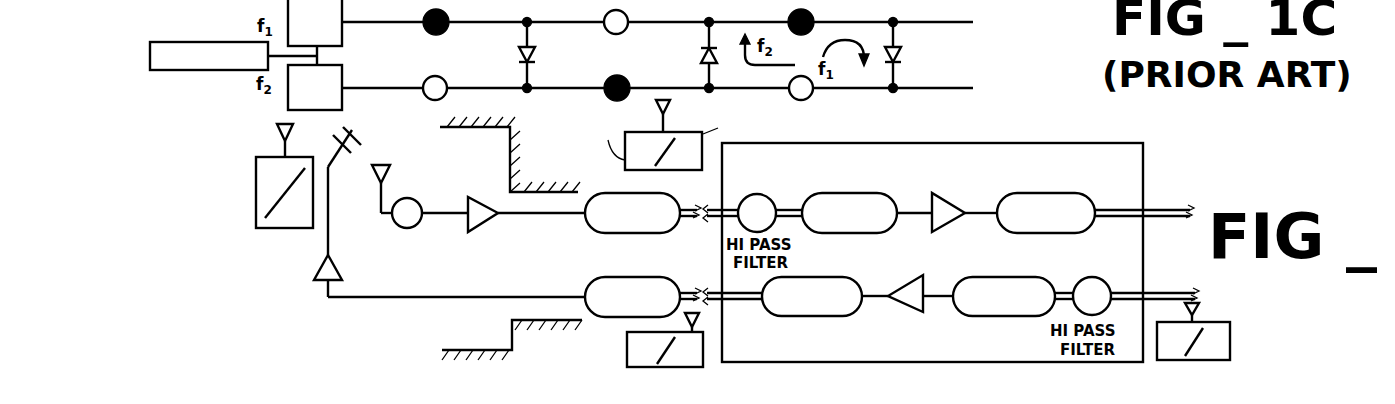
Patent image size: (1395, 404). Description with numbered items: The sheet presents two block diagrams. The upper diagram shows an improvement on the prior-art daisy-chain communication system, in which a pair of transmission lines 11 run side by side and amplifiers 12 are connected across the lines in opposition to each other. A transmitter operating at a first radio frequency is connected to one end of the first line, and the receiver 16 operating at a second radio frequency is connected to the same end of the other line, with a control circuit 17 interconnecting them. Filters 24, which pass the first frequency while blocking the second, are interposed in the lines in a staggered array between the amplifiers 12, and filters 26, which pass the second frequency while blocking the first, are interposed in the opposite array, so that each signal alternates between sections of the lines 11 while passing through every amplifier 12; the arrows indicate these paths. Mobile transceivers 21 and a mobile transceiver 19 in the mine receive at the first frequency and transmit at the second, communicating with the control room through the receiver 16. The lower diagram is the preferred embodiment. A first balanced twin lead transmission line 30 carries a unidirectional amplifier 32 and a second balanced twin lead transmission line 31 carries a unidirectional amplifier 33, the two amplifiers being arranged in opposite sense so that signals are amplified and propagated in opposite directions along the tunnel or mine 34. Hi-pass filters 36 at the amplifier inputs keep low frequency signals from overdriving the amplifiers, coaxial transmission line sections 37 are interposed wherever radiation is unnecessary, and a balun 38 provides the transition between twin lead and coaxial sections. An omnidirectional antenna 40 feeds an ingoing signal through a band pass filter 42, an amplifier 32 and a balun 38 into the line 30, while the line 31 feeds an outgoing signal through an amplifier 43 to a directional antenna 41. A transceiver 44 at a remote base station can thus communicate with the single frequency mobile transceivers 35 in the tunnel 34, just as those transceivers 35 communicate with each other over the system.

In FIG. 1C, the transmission lines 11 is at (478, 88).
In FIG. 1C, the amplifiers 12 is at (536, 52).
In FIG. 1C, the receiver 16 is at (288, 106).
In FIG. 1C, the control unit 17 is at (163, 41).
In FIG. 1C, the mobile transceivers 21 is at (390, 0).
In FIG. 1C, the filters 24 is at (446, 14).
In FIG. 1C, the filters 26 is at (426, 78).
In FIG. 2, the mobile transceiver 19 is at (625, 170).
In FIG. 2, the first balanced twin lead transmission line 30 is at (681, 222).
In FIG. 2, the second balanced twin lead transmission line 31 is at (688, 292).
In FIG. 2, the unidirectional amplifier 32 is at (479, 200).
In FIG. 2, the unidirectional amplifier 33 is at (908, 282).
In FIG. 2, the tunnel or mine 34 is at (538, 182).
In FIG. 2, the transceivers 35 is at (1232, 323).
In FIG. 2, the high pass filters 36 is at (762, 194).
In FIG. 2, the coaxial transmission line sections 37 is at (330, 228).
In FIG. 2, the balun 38 is at (611, 233).
In FIG. 2, the omnidirectional antenna 40 is at (383, 166).
In FIG. 2, the directional antenna 41 is at (361, 135).
In FIG. 2, the band pass filter 42 is at (420, 201).
In FIG. 2, the amplifier 43 is at (316, 272).
In FIG. 2, the transceiver 44 is at (262, 230).